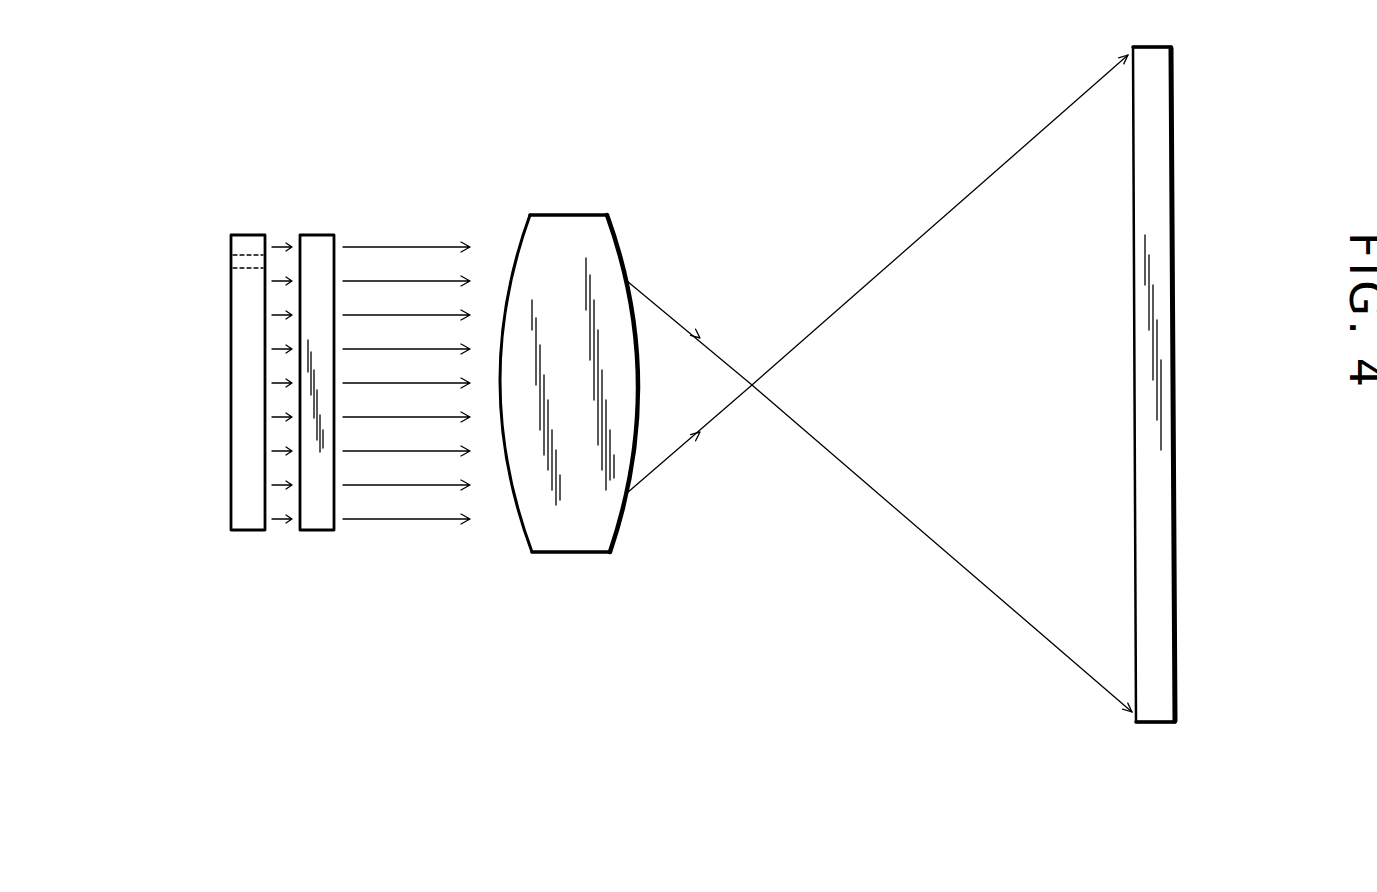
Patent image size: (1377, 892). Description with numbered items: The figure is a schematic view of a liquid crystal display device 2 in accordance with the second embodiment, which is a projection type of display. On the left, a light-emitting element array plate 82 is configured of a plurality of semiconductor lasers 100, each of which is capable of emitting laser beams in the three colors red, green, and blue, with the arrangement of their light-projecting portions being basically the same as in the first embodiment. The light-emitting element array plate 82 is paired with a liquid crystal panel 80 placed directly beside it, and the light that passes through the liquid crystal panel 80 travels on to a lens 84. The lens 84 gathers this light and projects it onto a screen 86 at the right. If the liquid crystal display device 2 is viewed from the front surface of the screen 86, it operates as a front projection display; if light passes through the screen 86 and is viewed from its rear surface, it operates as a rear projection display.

The liquid crystal display device 2 is at (721, 106).
The light-emitting element array plate 82 is at (256, 234).
The semiconductor laser 100 is at (233, 268).
The liquid crystal panel 80 is at (323, 234).
The lens 84 is at (566, 215).
The screen 86 is at (1133, 297).